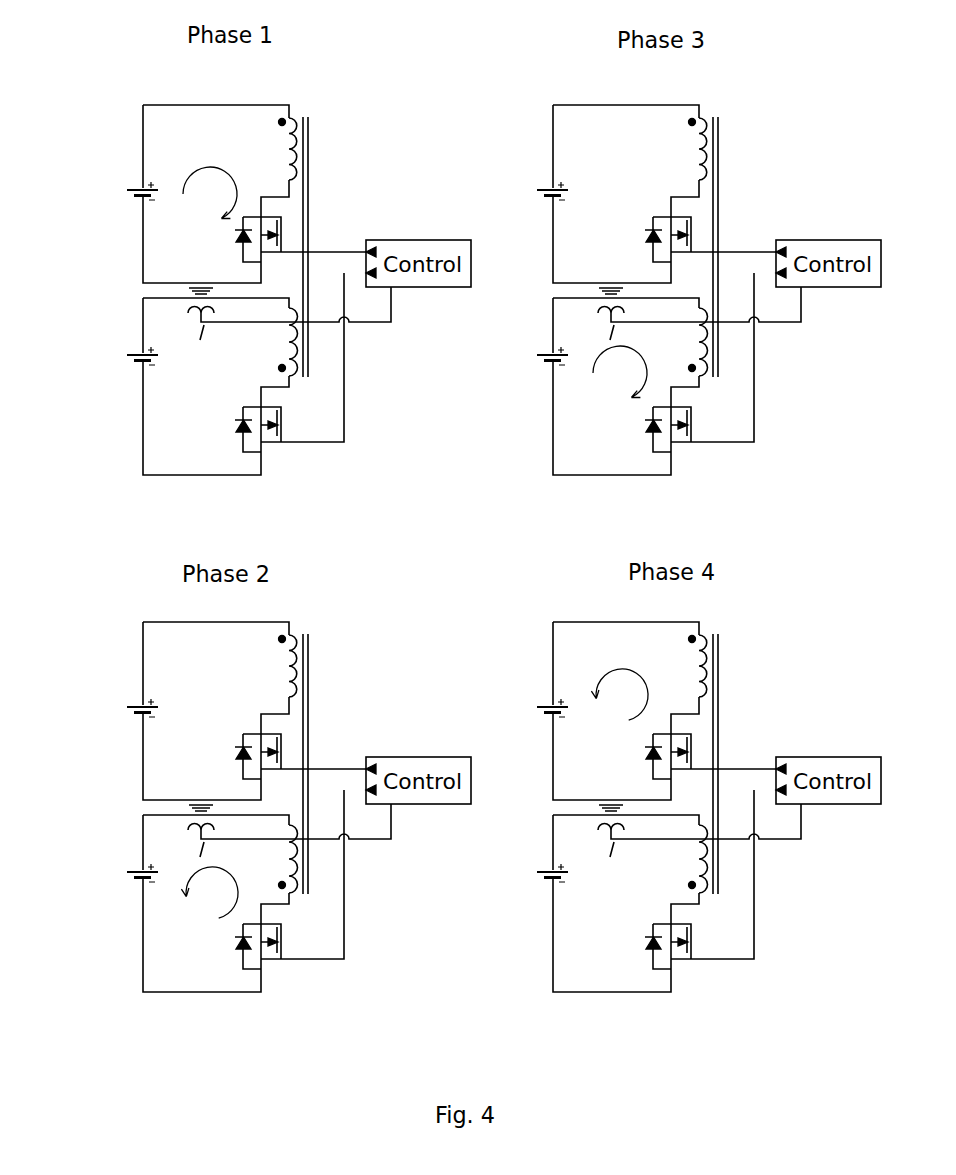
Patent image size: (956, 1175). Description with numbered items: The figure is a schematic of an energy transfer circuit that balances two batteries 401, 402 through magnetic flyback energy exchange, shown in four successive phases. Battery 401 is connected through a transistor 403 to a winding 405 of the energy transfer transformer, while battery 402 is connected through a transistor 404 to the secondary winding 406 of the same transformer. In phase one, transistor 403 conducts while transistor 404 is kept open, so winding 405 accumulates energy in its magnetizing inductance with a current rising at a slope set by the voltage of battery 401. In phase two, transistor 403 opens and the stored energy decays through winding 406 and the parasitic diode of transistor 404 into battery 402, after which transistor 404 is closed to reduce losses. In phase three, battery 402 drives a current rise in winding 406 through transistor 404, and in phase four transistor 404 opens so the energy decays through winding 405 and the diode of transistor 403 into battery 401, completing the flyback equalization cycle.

The battery 401 is at (306, 438).
The battery 402 is at (306, 606).
The transistor 403 is at (510, 478).
The transistor 404 is at (512, 700).
The winding 405 is at (550, 404).
The secondary winding 406 is at (556, 600).